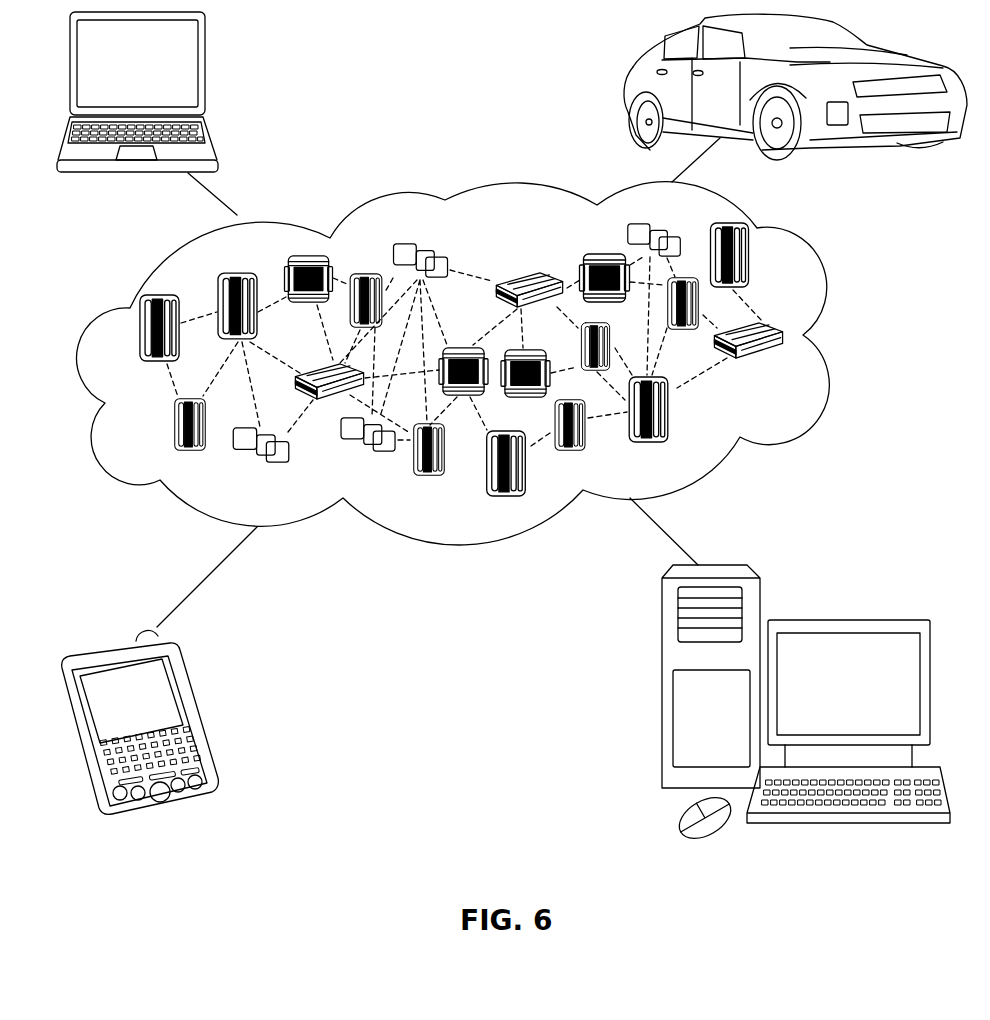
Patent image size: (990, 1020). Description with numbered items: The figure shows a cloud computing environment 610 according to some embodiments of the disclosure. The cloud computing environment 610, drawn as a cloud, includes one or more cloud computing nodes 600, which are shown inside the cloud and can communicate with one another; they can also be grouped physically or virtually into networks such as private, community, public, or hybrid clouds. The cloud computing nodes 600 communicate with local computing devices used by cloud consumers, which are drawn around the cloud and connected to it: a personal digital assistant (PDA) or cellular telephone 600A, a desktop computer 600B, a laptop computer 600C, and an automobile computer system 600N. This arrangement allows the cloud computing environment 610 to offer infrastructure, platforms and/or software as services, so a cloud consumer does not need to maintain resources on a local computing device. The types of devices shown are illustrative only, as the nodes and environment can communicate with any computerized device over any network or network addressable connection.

The cloud computing nodes 600 is at (790, 367).
The cloud computing environment 610 is at (847, 342).
The personal digital assistant (PDA) or cellular telephone 600A is at (200, 716).
The desktop computer 600B is at (845, 618).
The laptop computer 600C is at (207, 72).
The automobile computer system 600N is at (632, 96).